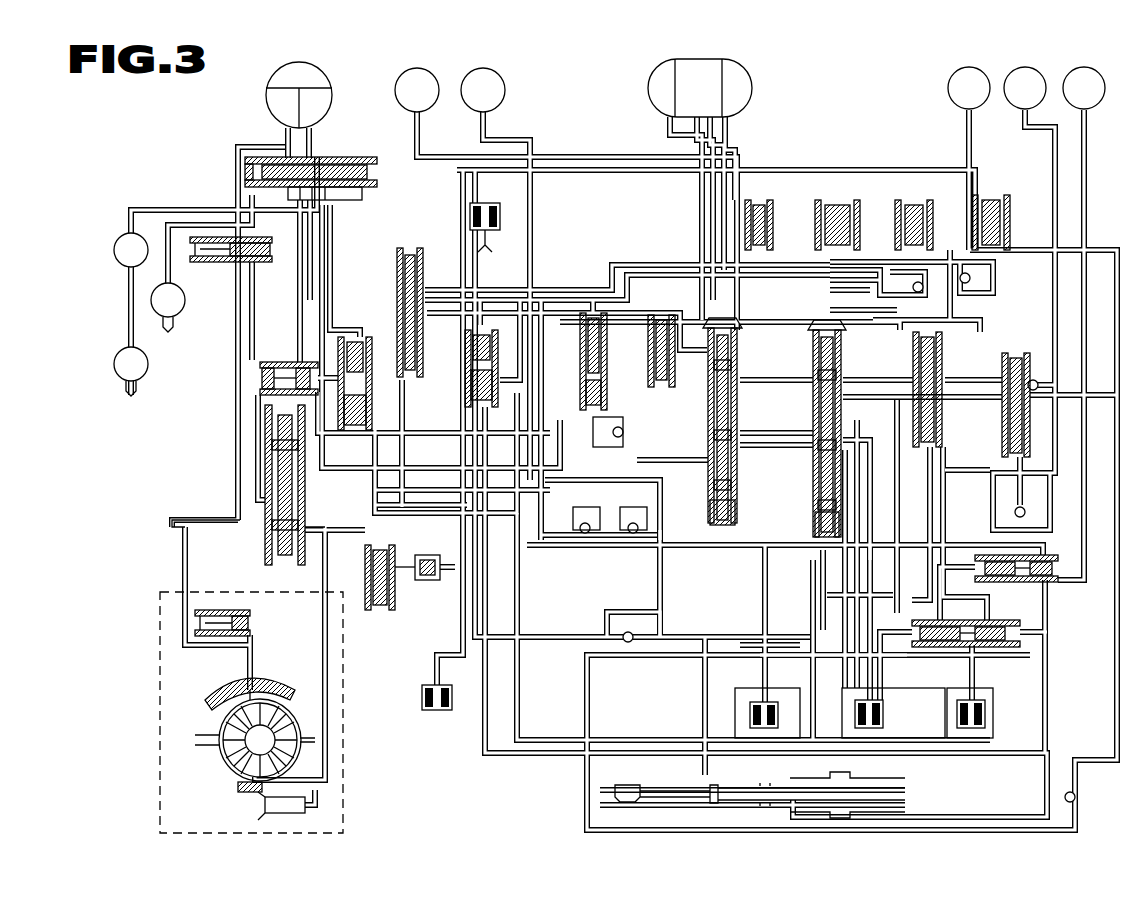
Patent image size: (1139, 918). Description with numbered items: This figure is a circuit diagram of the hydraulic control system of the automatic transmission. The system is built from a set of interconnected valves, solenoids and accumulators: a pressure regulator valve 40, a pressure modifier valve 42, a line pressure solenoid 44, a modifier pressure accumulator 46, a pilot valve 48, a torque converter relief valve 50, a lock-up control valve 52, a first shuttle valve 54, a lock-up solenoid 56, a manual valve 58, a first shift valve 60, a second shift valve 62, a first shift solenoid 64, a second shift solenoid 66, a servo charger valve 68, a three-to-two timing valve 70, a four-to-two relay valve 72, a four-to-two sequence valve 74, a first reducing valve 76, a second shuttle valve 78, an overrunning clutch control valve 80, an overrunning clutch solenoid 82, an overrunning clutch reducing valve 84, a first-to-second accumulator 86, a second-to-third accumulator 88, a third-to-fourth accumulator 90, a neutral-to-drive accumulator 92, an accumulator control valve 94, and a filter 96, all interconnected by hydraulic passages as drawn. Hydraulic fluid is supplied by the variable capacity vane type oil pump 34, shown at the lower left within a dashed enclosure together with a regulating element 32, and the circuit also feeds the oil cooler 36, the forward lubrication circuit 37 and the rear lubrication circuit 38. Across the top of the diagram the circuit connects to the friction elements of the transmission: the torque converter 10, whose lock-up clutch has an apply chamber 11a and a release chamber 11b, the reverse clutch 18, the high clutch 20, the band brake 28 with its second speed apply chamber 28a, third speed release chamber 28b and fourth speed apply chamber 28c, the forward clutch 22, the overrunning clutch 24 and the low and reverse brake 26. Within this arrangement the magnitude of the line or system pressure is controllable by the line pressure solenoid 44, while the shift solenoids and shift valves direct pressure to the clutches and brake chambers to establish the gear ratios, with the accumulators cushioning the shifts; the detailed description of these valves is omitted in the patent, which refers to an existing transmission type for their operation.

The torque converter 10 is at (324, 62).
The apply chamber 11a is at (323, 105).
The release chamber 11b is at (268, 105).
The reverse clutch 18 is at (421, 69).
The high clutch 20 is at (491, 69).
The forward clutch 22 is at (973, 67).
The overrunning clutch 24 is at (1031, 67).
The low & reverse brake 26 is at (1091, 67).
The band brake 28 is at (703, 73).
The second speed apply chamber 28a is at (646, 91).
The third speed release chamber 28b is at (700, 59).
The fourth speed apply chamber 28c is at (758, 90).
The pressure regulator valve 32 is at (256, 633).
The variable capacity vane type oil pump 34 is at (232, 774).
The oil cooler 36 is at (114, 250).
The forward lubrication circuit 37 is at (182, 316).
The rear lubrication circuit 38 is at (116, 358).
The pressure regulator valve 40 is at (266, 554).
The pressure modifier valve 42 is at (356, 334).
The line pressure solenoid 44 is at (424, 712).
The modifier pressure accumulator 46 is at (288, 360).
The pilot valve 48 is at (396, 612).
The torque converter relief valve 50 is at (270, 266).
The lock-up control valve 52 is at (375, 198).
The first shuttle valve 54 is at (586, 414).
The lock-up solenoid 56 is at (506, 216).
The manual valve 58 is at (832, 773).
The first shift valve 60 is at (831, 328).
The second shift valve 62 is at (746, 326).
The first shift solenoid 64 is at (886, 712).
The second shift solenoid 66 is at (771, 703).
The servo charger valve 68 is at (398, 282).
The 3-2 timing valve 70 is at (663, 392).
The 4-2 relay valve 72 is at (812, 542).
The 4-2 sequence valve 74 is at (746, 506).
The first reducing valve 76 is at (1050, 553).
The second shuttle valve 78 is at (958, 650).
The overrunning clutch control valve 80 is at (946, 426).
The overrunning clutch solenoid 82 is at (972, 731).
The overrunning clutch reducing valve 84 is at (1018, 350).
The 1-2 accumulator 86 is at (840, 210).
The 2-3 accumulator 88 is at (915, 205).
The 3-4 accumulator 90 is at (766, 216).
The N-D accumulator 92 is at (996, 205).
The accumulator control valve 94 is at (484, 326).
The filter 96 is at (426, 583).